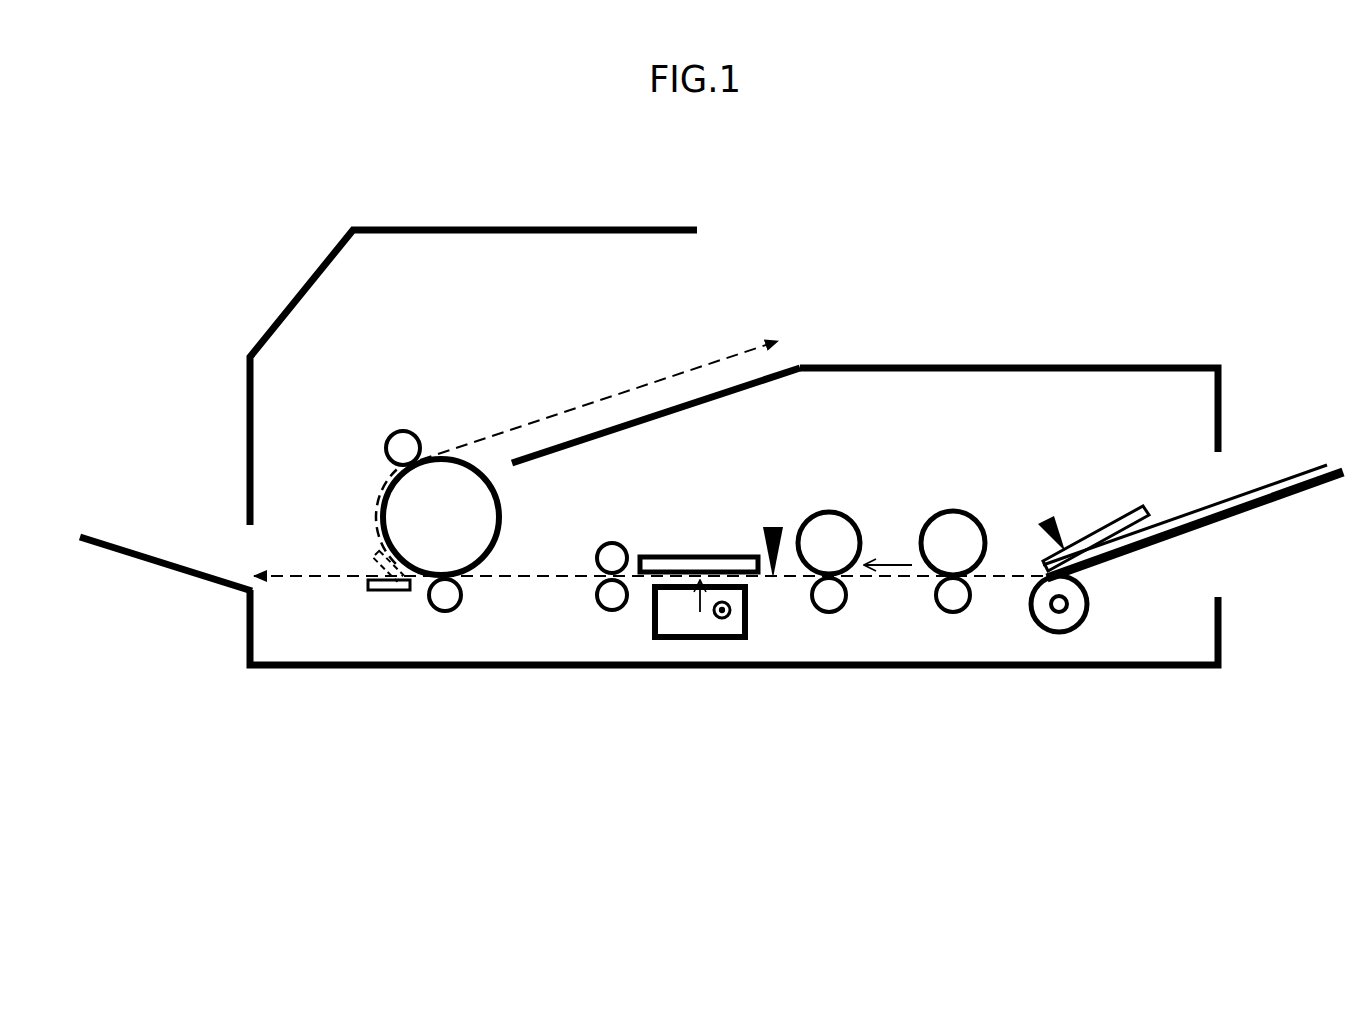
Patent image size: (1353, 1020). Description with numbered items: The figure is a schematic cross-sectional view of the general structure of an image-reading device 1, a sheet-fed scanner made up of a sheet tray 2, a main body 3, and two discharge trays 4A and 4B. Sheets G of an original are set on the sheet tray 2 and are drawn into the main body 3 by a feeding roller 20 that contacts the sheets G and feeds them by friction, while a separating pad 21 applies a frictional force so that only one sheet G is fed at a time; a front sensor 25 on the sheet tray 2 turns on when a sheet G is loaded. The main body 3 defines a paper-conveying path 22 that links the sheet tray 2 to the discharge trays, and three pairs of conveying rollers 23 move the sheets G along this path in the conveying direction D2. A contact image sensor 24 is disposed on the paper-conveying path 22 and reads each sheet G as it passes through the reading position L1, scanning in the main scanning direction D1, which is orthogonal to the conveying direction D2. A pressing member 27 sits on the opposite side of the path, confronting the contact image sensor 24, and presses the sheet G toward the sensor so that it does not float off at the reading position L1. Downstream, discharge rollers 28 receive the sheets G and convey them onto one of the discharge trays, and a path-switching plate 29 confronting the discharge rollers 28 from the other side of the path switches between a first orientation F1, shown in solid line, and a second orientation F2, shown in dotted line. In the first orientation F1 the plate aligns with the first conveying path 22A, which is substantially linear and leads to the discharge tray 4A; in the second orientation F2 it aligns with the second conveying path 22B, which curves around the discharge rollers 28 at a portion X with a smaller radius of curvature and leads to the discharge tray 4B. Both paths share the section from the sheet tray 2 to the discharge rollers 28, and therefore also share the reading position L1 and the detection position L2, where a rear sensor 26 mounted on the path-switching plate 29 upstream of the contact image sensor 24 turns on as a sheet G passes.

The image-reading device 1 is at (1124, 304).
The sheet tray 2 is at (1270, 505).
The main body 3 is at (985, 365).
The discharge tray 4A is at (117, 556).
The discharge tray 4B is at (752, 378).
The feeding roller 20 is at (1066, 620).
The separating pad 21 is at (1118, 512).
The paper-conveying path 22 is at (890, 578).
The first conveying path 22A is at (312, 580).
The second conveying path 22B is at (531, 420).
The conveying rollers 23 is at (603, 560).
The contact image sensor 24 is at (656, 622).
The front sensor 25 is at (1043, 520).
The rear sensor 26 is at (776, 527).
The pressing member 27 is at (686, 555).
The discharge rollers 28 is at (406, 440).
The path-switching plate 29 is at (408, 596).
The sheet G is at (1312, 462).
The portion X is at (362, 468).
The first orientation F1 is at (386, 596).
The second orientation F2 is at (365, 556).
The main scanning direction D1 is at (723, 620).
The conveying direction D2 is at (890, 562).
The reading position L1 is at (700, 614).
The detection position L2 is at (773, 584).